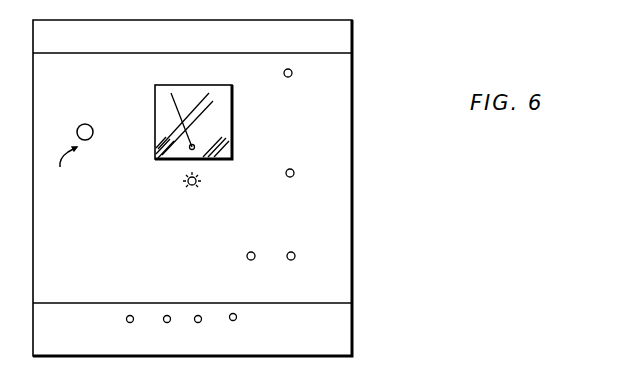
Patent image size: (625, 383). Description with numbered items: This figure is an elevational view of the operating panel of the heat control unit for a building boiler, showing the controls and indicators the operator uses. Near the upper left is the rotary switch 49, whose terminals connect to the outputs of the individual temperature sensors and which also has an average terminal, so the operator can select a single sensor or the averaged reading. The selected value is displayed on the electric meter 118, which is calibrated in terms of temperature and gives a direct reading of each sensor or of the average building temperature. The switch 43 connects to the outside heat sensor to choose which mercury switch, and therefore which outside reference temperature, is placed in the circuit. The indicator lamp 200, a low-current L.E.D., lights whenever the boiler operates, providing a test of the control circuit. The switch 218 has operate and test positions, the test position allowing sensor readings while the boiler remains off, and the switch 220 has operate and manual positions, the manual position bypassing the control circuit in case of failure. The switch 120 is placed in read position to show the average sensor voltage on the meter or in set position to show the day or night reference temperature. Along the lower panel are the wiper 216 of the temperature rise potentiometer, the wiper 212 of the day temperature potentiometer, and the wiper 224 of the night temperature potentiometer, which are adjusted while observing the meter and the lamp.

The switch 43 is at (288, 77).
The electric meter 118 is at (233, 125).
The rotary switch 49 is at (92, 150).
The indicator lamp 200 is at (185, 188).
The switch 218 is at (290, 169).
The switch 220 is at (251, 252).
The wiper of potentiometer R23 212 is at (167, 315).
The switch 120 is at (233, 313).
The wiper of potentiometer R7 216 is at (130, 323).
The wiper of potentiometer R25 224 is at (198, 323).